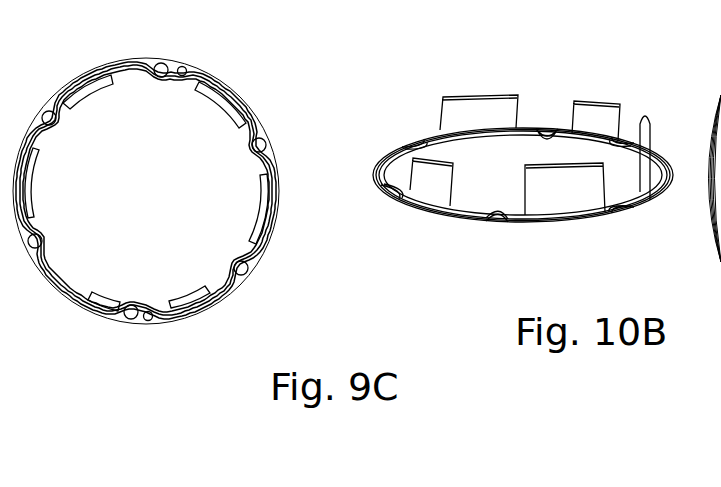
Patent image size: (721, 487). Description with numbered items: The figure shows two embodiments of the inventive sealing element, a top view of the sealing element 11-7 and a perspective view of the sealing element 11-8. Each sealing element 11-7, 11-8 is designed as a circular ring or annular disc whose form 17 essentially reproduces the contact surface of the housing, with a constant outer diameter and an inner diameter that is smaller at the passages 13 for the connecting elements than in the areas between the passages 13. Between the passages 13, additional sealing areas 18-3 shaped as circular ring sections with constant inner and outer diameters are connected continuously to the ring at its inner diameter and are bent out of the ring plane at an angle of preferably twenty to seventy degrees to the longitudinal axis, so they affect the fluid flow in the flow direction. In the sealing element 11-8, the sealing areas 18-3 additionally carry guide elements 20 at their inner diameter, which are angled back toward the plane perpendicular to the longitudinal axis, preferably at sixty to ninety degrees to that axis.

In FIG. 9C, the sealing element 11-7 is at (250, 90).
In FIG. 10B, the sealing element 11-8 is at (607, 98).
In FIG. 9C, the passages 13 is at (50, 126).
In FIG. 10B, the passages 13 is at (412, 143).
In FIG. 9C, the form 17 is at (277, 243).
In FIG. 10B, the form 17 is at (373, 174).
In FIG. 9C, the sealing areas 18-3 is at (89, 93).
In FIG. 10B, the sealing areas 18-3 is at (465, 115).
In FIG. 10B, the guide elements 20 is at (572, 160).